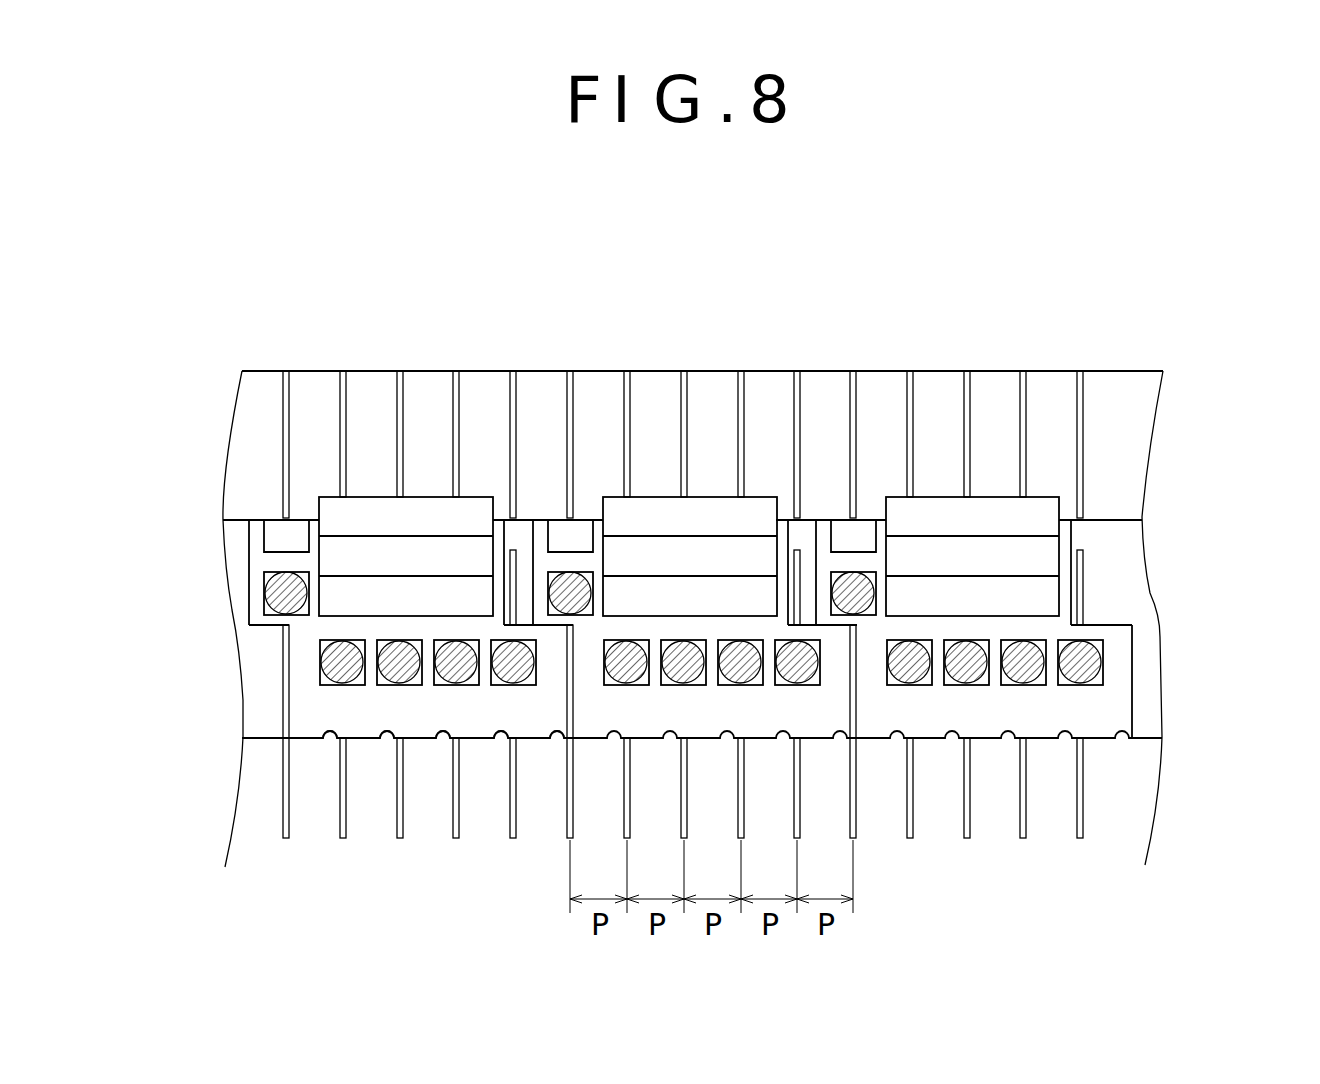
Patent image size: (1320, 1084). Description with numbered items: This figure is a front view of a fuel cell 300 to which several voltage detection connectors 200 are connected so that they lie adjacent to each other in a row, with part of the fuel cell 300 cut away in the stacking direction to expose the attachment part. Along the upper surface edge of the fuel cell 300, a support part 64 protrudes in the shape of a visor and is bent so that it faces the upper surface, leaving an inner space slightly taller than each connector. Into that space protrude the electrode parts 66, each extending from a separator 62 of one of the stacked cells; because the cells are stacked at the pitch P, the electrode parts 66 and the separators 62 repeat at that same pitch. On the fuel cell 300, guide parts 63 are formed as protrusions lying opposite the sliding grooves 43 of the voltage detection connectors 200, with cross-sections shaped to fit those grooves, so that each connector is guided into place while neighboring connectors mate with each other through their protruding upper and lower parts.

The fuel cell 300 is at (889, 360).
The voltage detection connector 200 is at (667, 488).
The support part 64 is at (1140, 453).
The electrode part 66 is at (1084, 570).
The sliding groove 43 is at (333, 738).
The guide part 63 is at (328, 745).
The separator 62 is at (910, 839).